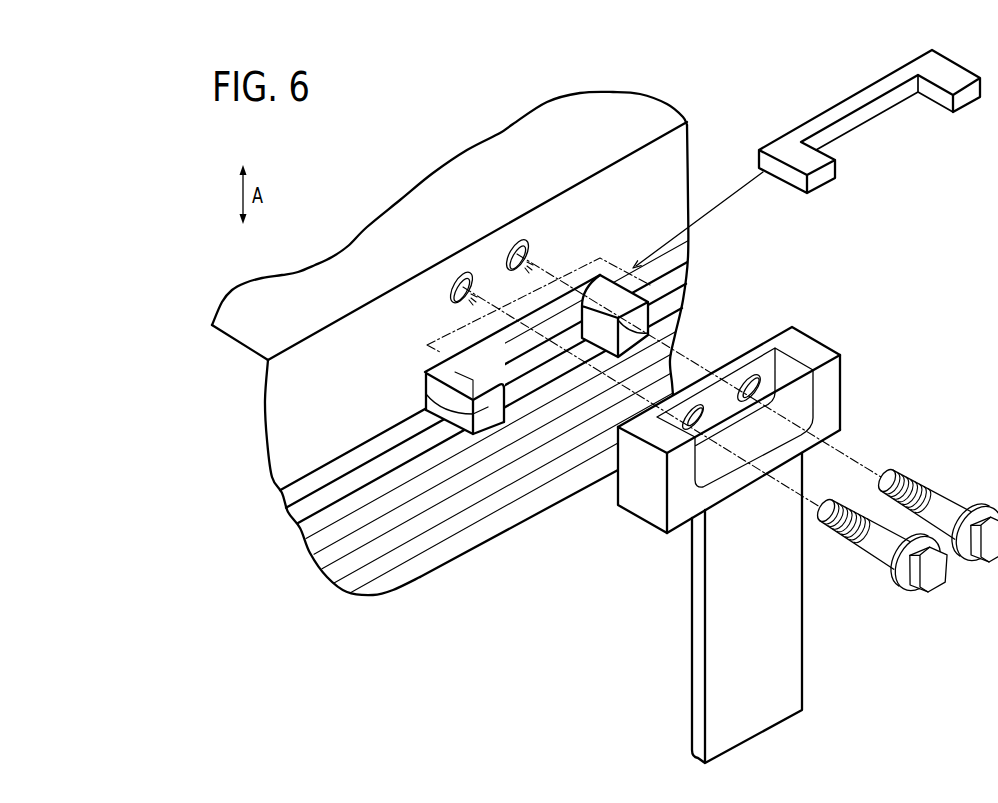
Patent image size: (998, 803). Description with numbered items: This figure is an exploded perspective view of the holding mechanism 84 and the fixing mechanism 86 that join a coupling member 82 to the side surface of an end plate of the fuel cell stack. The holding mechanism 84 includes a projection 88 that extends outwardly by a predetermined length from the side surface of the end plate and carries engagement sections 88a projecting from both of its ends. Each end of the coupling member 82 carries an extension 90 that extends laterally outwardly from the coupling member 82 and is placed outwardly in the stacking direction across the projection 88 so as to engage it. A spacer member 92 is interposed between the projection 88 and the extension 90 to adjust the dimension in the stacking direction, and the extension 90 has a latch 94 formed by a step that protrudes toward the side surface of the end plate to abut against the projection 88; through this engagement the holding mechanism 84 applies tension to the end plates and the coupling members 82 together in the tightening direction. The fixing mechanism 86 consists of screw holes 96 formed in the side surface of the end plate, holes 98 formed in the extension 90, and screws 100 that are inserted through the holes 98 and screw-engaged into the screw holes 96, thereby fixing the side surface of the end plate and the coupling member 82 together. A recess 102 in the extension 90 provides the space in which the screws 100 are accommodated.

The screw hole 96 is at (460, 274).
The projection 88 is at (573, 412).
The engagement section 88a is at (573, 428).
The holding mechanism 84 is at (489, 434).
The spacer member 92 is at (823, 182).
The extension 90 is at (740, 422).
The fixing mechanism 86 is at (713, 462).
The hole 98 is at (746, 378).
The recess 102 is at (795, 372).
The latch 94 is at (652, 524).
The coupling member 82 is at (715, 617).
The screw 100 is at (858, 508).